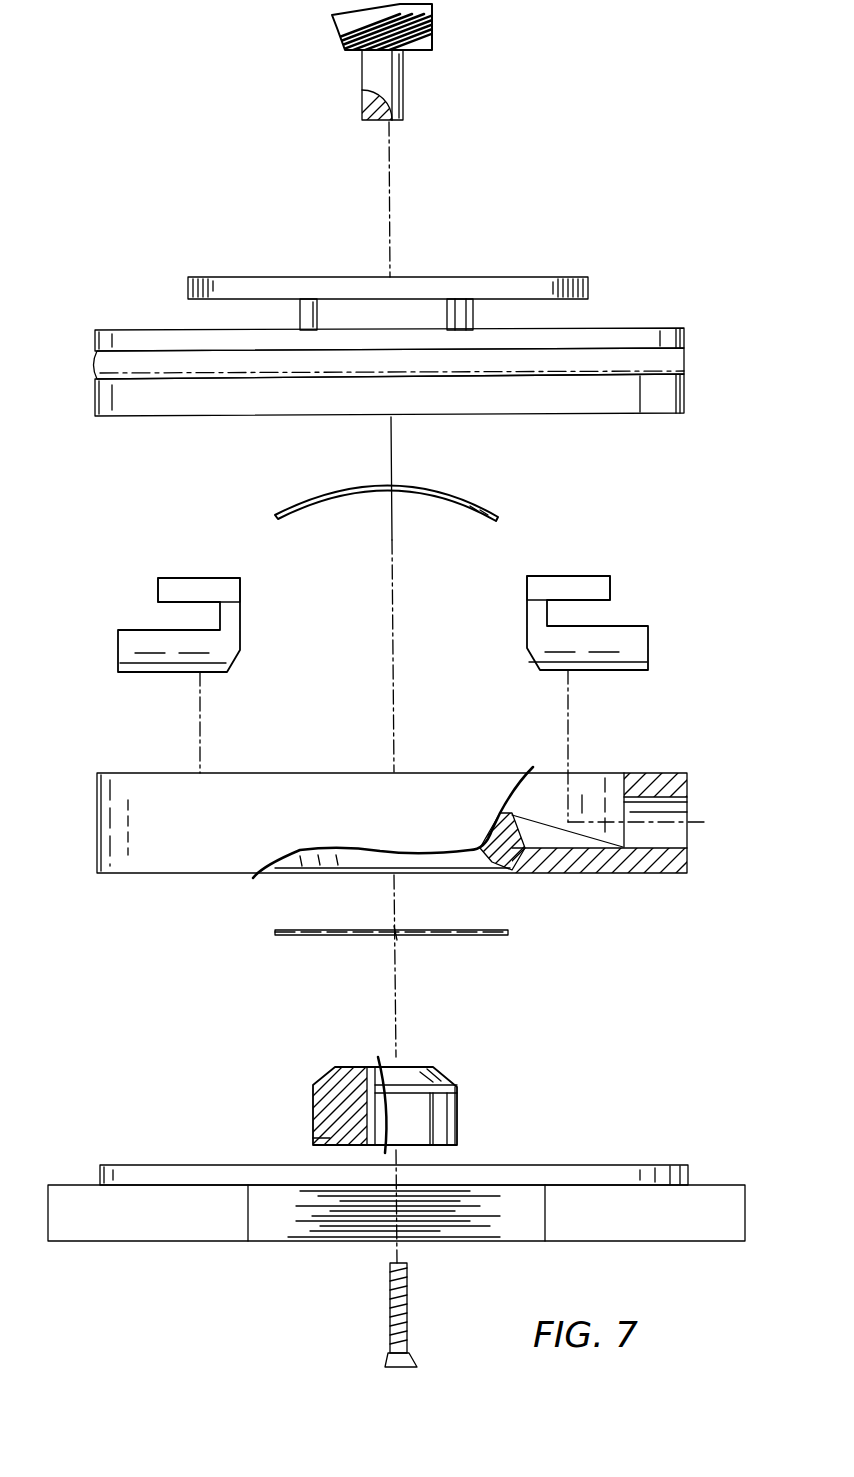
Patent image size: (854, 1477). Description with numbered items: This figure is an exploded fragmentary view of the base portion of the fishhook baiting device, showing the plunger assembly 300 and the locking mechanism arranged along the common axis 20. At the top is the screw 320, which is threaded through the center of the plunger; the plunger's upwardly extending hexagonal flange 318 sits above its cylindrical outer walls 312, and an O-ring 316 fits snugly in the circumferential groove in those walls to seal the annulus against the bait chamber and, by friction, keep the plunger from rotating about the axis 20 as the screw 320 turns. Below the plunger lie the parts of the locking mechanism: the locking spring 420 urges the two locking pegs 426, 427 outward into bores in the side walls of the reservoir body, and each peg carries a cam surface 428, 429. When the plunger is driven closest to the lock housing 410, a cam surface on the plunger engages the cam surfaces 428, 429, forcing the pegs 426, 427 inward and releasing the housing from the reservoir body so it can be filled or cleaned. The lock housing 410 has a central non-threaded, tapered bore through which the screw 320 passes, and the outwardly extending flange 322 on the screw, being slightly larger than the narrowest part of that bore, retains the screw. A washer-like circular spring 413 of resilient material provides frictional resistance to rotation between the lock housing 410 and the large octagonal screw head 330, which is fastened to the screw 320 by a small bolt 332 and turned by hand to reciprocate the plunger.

The axis 20 is at (388, 167).
The screw 320 is at (432, 40).
The hexagonal flange 318 is at (565, 277).
The outer walls 312 is at (627, 335).
The O-ring 316 is at (686, 357).
The locking spring 420 is at (455, 497).
The locking peg 426 is at (128, 638).
The cam surface 428 is at (166, 578).
The locking peg 427 is at (645, 643).
The cam surface 429 is at (605, 578).
The lock housing 410 is at (483, 787).
The circular spring 413 is at (485, 935).
The outwardly extending flange 322 is at (457, 1088).
The plunger assembly 300 is at (300, 1258).
The screw head 330 is at (682, 1220).
The bolt 332 is at (390, 1332).